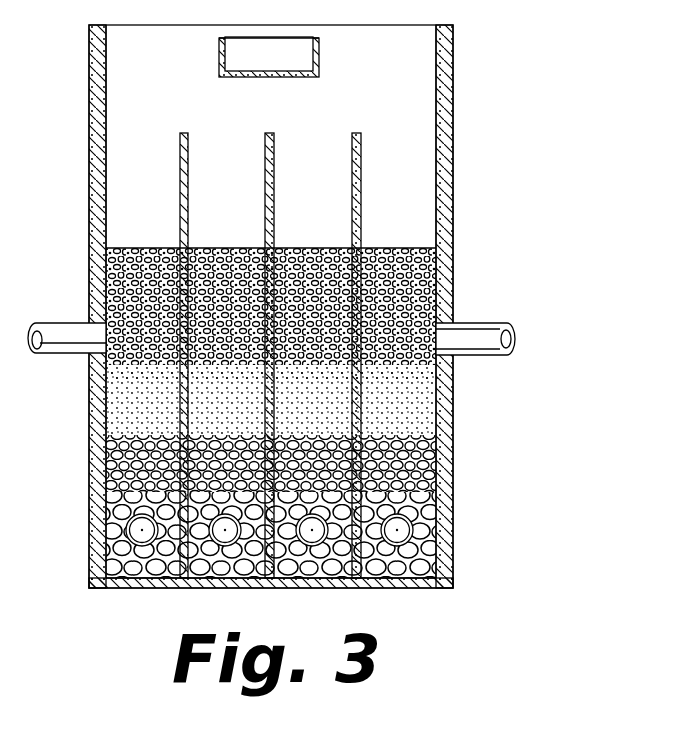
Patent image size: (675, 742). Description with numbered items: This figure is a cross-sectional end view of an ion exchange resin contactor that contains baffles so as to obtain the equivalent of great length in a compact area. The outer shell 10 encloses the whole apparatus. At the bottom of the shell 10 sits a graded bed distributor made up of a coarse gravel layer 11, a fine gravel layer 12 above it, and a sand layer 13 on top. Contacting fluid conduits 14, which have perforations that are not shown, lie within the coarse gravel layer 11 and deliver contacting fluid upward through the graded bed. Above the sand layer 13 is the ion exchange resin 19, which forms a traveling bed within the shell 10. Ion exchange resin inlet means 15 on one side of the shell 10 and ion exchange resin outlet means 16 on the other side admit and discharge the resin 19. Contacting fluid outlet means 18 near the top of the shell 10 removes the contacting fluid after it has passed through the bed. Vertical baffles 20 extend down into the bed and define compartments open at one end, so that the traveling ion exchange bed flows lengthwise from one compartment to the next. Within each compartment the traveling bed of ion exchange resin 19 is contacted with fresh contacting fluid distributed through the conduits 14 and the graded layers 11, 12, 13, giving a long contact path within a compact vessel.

The shell 10 is at (453, 133).
The coarse gravel layer 11 is at (437, 510).
The fine gravel layer 12 is at (440, 455).
The sand layer 13 is at (465, 397).
The contacting fluid conduits 14 is at (225, 548).
The ion exchange resin inlet means 15 is at (70, 345).
The ion exchange resin outlet means 16 is at (503, 337).
The contacting fluid outlet means 18 is at (219, 50).
The ion exchange resin 19 is at (440, 272).
The baffles 20 is at (352, 143).